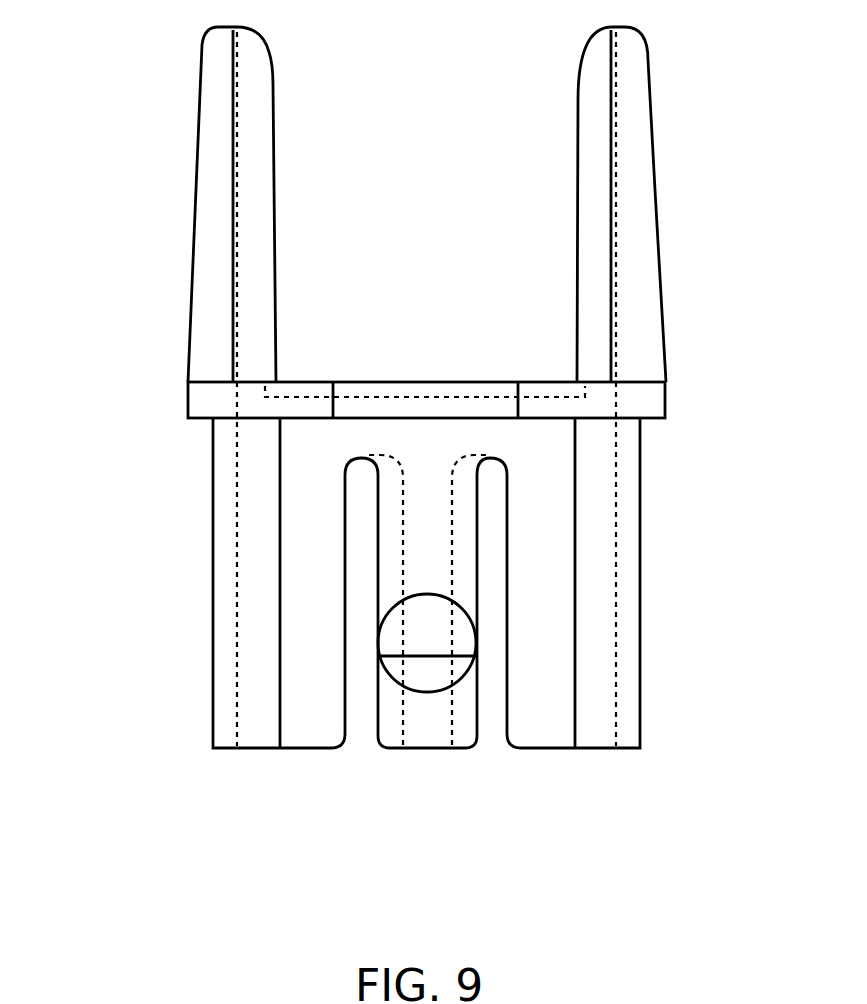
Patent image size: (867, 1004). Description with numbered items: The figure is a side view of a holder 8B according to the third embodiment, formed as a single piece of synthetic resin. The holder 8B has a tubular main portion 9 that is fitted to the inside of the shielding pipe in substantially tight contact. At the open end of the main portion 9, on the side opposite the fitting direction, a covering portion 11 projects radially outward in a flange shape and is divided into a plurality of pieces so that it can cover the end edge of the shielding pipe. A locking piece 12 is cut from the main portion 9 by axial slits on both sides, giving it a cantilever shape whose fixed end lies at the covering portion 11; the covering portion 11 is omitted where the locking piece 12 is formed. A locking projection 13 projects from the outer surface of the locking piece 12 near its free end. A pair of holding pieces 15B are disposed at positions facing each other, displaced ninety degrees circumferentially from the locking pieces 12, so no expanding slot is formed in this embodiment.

The holder 8B is at (417, 442).
The main portion 9 is at (220, 467).
The covering portion 11 is at (301, 397).
The locking piece 12 is at (395, 730).
The locking projection 13 is at (455, 628).
The holding piece 15B is at (198, 193).